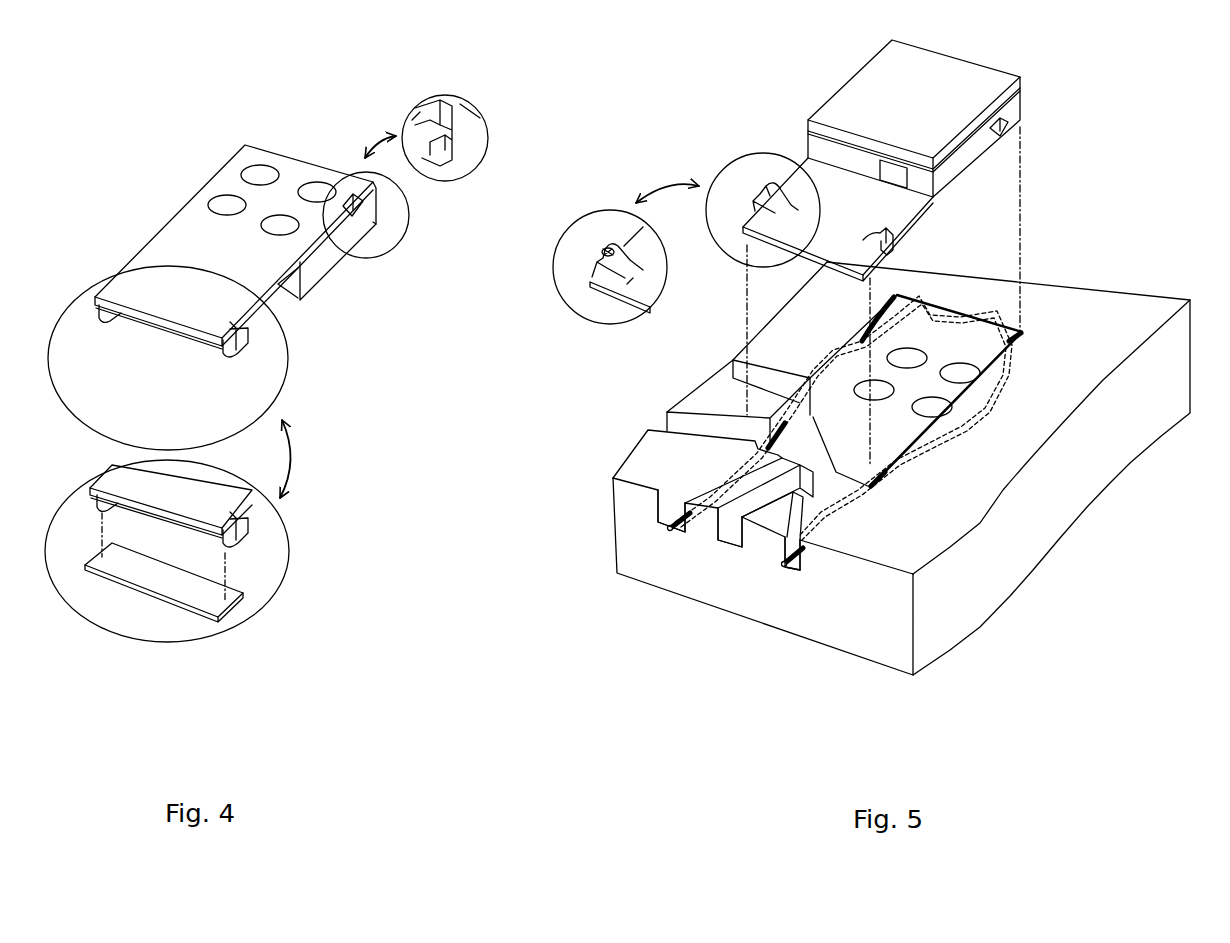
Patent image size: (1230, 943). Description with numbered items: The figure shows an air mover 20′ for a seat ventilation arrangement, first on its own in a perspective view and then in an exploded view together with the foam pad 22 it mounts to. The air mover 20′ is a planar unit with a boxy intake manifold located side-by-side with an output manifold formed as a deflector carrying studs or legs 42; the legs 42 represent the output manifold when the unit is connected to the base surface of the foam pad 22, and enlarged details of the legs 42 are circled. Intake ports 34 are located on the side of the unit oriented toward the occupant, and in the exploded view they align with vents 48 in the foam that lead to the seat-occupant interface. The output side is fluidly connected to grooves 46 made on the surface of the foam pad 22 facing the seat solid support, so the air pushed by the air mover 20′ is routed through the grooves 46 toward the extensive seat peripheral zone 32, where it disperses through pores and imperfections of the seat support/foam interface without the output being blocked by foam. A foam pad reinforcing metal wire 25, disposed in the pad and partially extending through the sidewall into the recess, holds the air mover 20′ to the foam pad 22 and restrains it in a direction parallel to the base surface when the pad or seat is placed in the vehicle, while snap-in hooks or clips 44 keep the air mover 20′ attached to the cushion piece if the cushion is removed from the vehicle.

In FIG. 4, the air mover 20′ is at (264, 117).
In FIG. 5, the air mover 20′ is at (1036, 97).
In FIG. 4, the intake ports 34 is at (262, 169).
In FIG. 4, the clips 44 is at (447, 151).
In FIG. 4, the legs 42 is at (236, 349).
In FIG. 5, the legs 42 is at (603, 243).
In FIG. 5, the seat peripheral zone 32 is at (824, 176).
In FIG. 5, the foam pad 22 is at (1083, 313).
In FIG. 5, the vents 48 is at (962, 370).
In FIG. 5, the reinforcing metal wire 25 is at (980, 427).
In FIG. 5, the grooves 46 is at (710, 533).